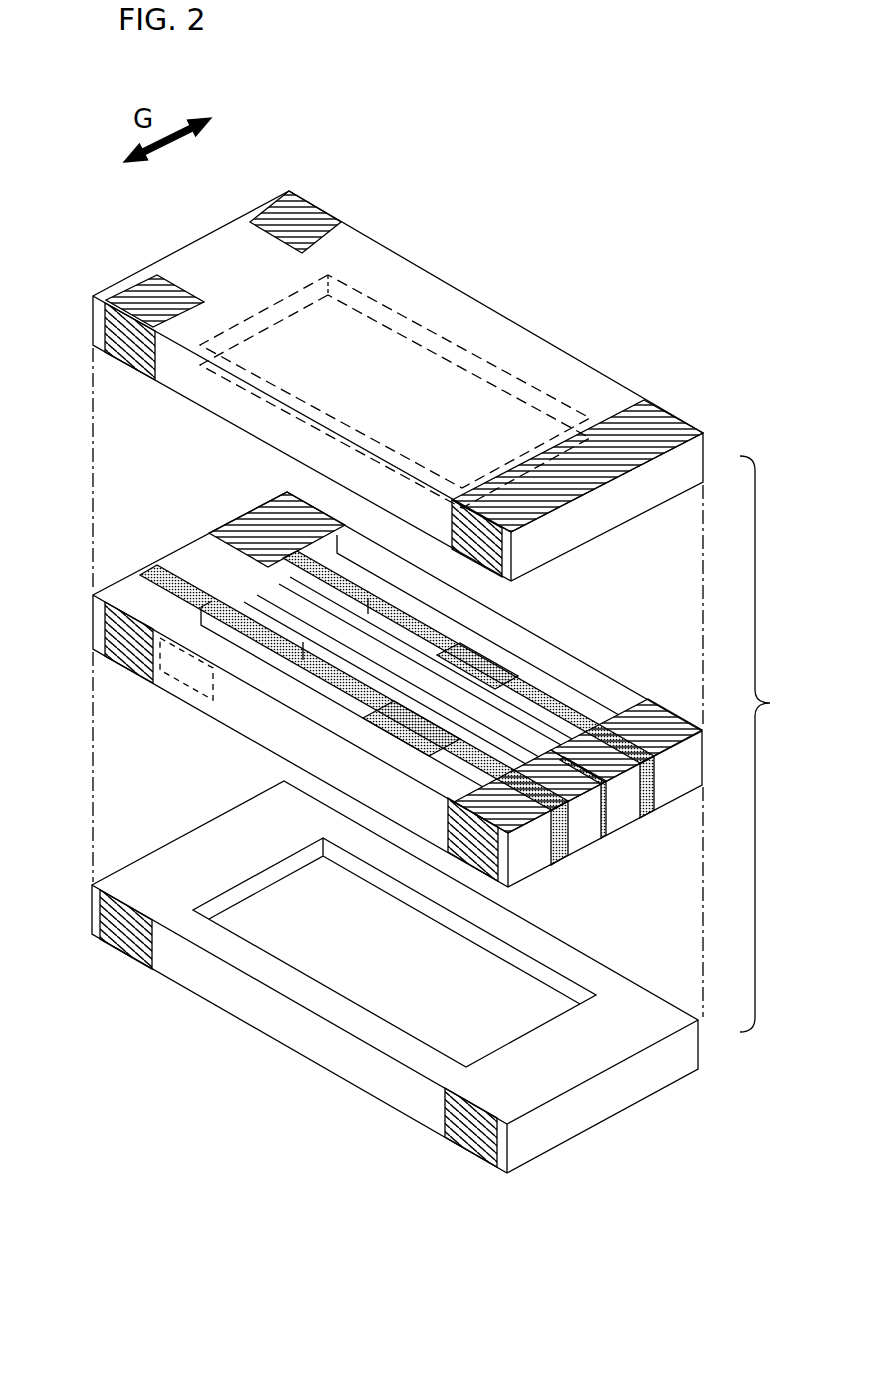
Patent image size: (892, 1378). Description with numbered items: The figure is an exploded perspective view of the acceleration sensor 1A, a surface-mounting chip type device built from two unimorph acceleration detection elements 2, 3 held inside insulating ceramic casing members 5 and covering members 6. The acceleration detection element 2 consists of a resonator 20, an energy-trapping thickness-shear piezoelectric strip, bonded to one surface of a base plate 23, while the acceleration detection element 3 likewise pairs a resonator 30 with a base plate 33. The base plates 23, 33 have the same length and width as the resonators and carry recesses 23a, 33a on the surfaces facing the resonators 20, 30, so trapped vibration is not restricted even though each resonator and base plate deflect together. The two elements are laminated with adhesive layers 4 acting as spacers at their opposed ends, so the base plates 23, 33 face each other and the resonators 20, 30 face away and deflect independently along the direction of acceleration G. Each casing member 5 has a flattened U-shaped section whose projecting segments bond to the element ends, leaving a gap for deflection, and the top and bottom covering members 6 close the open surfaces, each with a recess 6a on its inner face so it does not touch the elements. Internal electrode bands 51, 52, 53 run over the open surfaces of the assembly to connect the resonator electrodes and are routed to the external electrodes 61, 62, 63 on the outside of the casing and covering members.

The acceleration sensor 1A is at (778, 744).
The acceleration detection element 2 is at (658, 818).
The acceleration detection element 3 is at (602, 845).
The adhesive layer 4 is at (245, 553).
The casing member 5 is at (560, 658).
The covering member 6 is at (527, 333).
The recess 6a is at (430, 328).
The resonator 20 is at (262, 524).
The base plate 23 is at (245, 556).
The recess 23a is at (472, 650).
The resonator 30 is at (170, 565).
The base plate 33 is at (180, 578).
The recess 33a is at (310, 658).
The internal electrode band 51 is at (630, 712).
The internal electrode band 52 is at (273, 515).
The internal electrode band 53 is at (176, 695).
The external electrode 61 is at (658, 420).
The external electrode 62 is at (300, 222).
The external electrode 63 is at (135, 290).